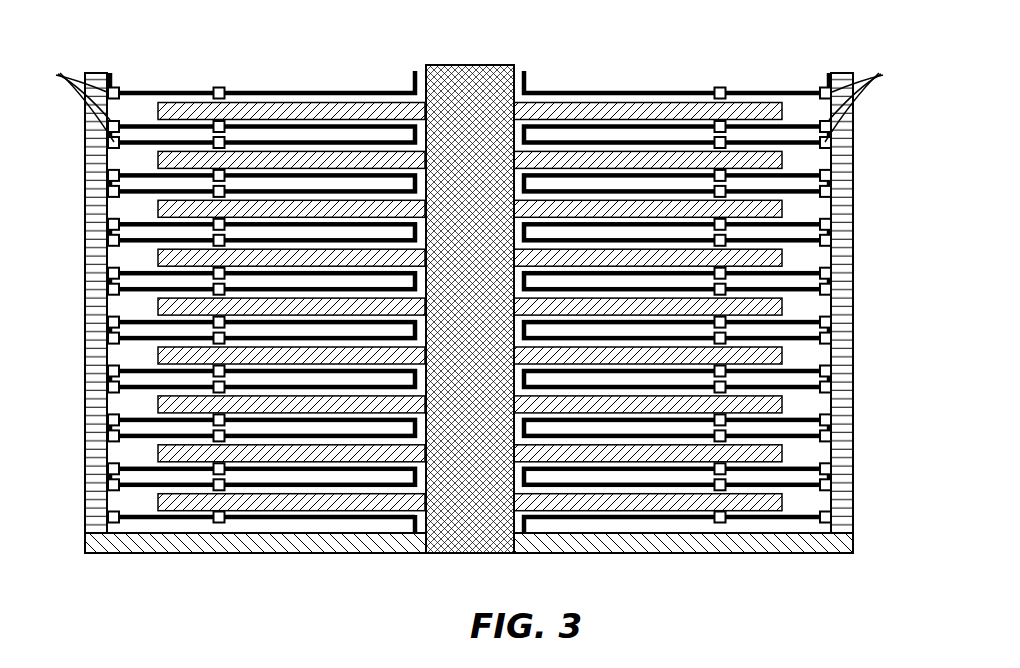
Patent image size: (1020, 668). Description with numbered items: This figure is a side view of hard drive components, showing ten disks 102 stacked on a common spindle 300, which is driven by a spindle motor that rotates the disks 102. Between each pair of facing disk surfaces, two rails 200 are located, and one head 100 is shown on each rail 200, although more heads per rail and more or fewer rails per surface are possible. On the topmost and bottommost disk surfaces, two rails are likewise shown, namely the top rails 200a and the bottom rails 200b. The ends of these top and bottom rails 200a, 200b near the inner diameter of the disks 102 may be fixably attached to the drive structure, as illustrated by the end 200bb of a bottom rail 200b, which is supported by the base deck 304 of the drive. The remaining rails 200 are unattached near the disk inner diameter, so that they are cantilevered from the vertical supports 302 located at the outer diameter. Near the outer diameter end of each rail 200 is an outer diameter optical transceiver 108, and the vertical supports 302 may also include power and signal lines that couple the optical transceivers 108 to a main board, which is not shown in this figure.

The head 100 is at (217, 90).
The disk 102 is at (317, 102).
The outer diameter optical transceiver 108 is at (472, 92).
The rail 200 is at (140, 222).
The top rail 200a is at (147, 91).
The bottom rail 200b is at (148, 518).
The end of rail 200bb is at (413, 520).
The spindle 300 is at (468, 75).
The vertical support 302 is at (95, 272).
The base deck 304 is at (306, 553).